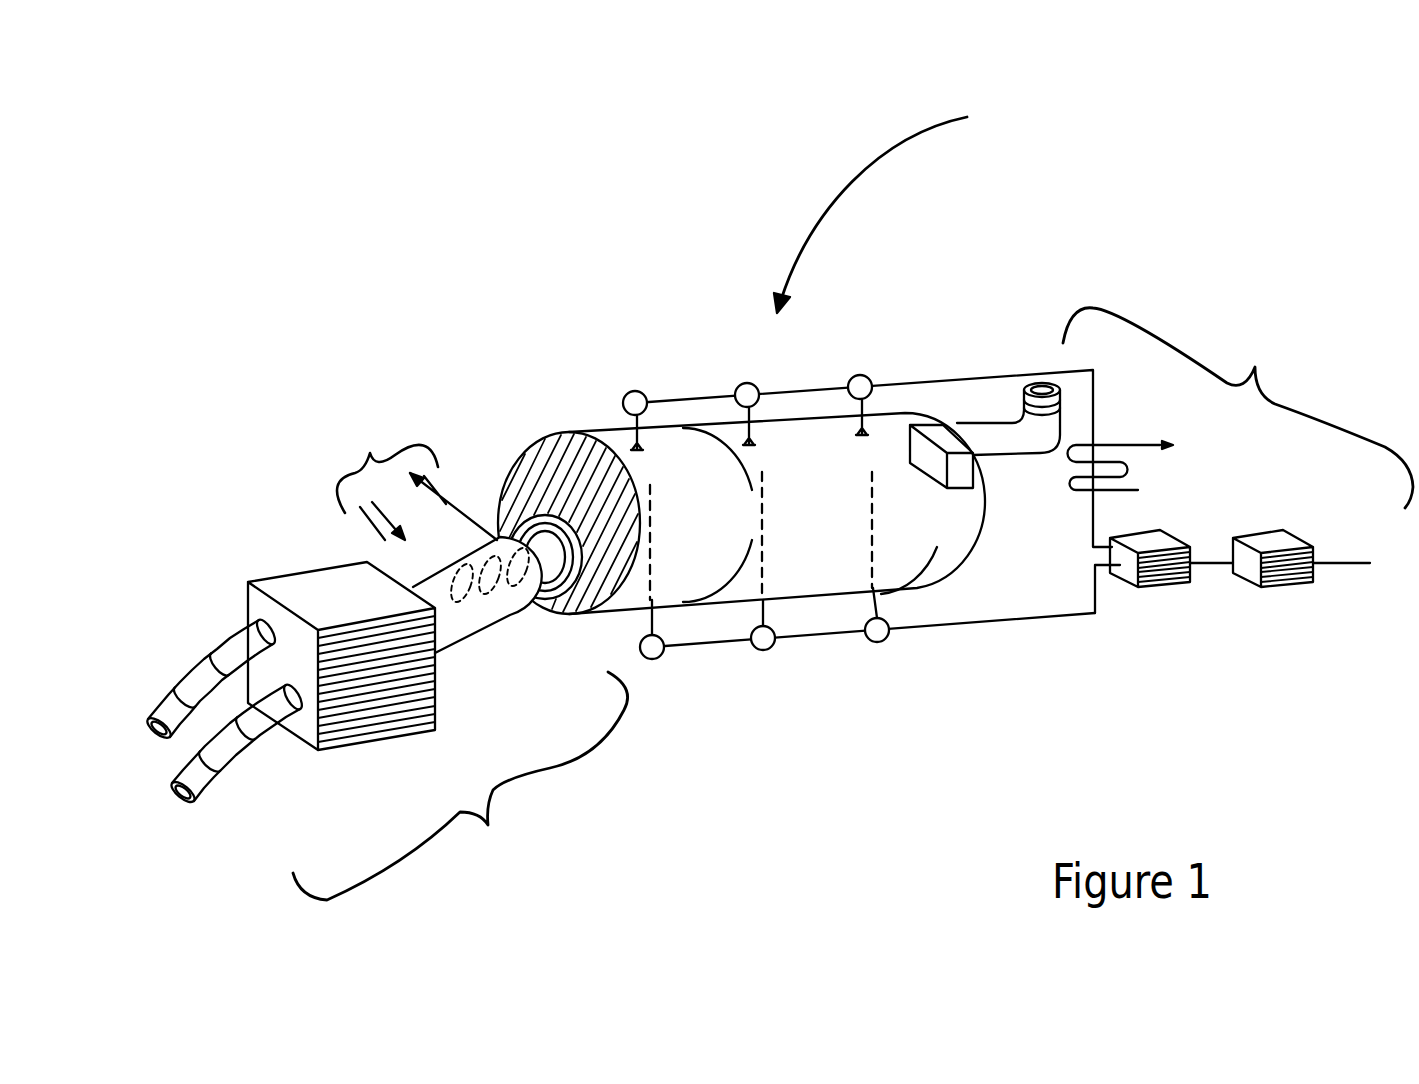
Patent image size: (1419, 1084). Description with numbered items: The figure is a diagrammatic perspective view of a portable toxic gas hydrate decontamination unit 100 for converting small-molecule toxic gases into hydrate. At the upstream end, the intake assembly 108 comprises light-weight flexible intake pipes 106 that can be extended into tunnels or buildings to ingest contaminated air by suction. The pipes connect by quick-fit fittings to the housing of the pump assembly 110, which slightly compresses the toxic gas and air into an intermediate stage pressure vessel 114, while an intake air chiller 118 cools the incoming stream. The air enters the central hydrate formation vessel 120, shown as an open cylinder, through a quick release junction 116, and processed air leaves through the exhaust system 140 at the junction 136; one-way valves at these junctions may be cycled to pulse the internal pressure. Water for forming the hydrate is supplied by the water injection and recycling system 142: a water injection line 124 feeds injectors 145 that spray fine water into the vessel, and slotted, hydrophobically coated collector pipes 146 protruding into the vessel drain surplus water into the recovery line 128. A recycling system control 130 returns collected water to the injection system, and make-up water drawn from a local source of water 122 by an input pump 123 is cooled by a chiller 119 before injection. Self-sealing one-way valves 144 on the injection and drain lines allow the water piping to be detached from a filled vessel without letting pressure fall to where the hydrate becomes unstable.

The toxic gas hydrate decontamination unit 100 is at (904, 204).
The flexible intake pipes 106 is at (157, 745).
The intake assembly 108 is at (460, 786).
The pump assembly 110 is at (378, 740).
The intermediate stage pressure vessel 114 is at (493, 632).
The quick release junction 116 is at (540, 515).
The intake air chiller 118 is at (417, 476).
The chiller 119 is at (1140, 468).
The hydrate formation vessel 120 is at (537, 453).
The local source of water 122 is at (1330, 558).
The input pump 123 is at (1287, 587).
The water injection line 124 is at (995, 377).
The recovery line 128 is at (840, 633).
The recycling system control 130 is at (1163, 587).
The junction 136 is at (927, 478).
The exhaust system 140 is at (1018, 448).
The water injection and recycling system 142 is at (1238, 408).
The one-way valves 144 is at (645, 392).
The injectors 145 is at (641, 452).
The collector pipes 146 is at (650, 552).